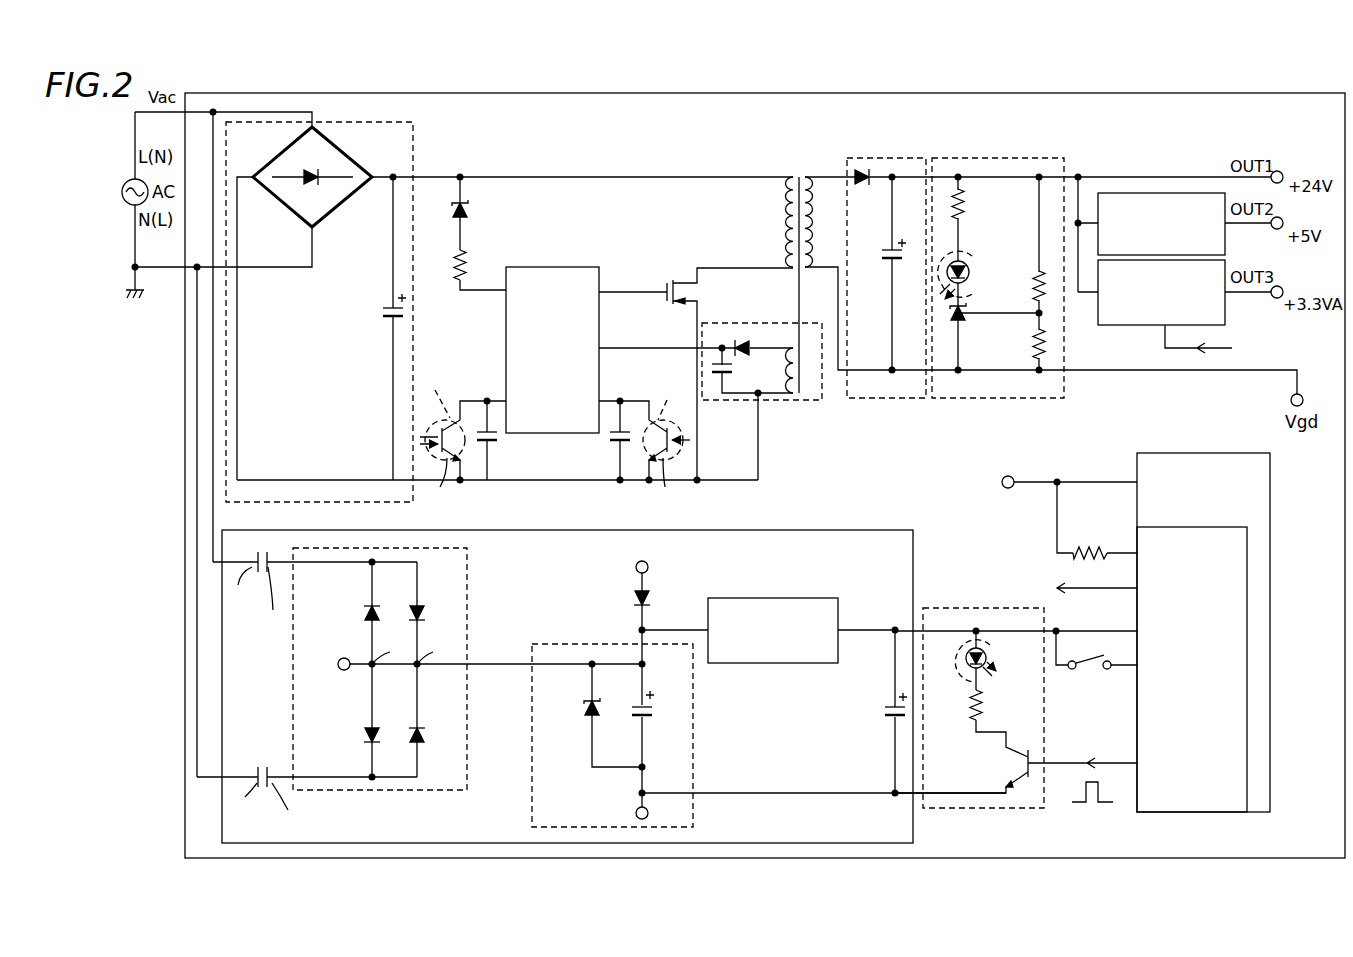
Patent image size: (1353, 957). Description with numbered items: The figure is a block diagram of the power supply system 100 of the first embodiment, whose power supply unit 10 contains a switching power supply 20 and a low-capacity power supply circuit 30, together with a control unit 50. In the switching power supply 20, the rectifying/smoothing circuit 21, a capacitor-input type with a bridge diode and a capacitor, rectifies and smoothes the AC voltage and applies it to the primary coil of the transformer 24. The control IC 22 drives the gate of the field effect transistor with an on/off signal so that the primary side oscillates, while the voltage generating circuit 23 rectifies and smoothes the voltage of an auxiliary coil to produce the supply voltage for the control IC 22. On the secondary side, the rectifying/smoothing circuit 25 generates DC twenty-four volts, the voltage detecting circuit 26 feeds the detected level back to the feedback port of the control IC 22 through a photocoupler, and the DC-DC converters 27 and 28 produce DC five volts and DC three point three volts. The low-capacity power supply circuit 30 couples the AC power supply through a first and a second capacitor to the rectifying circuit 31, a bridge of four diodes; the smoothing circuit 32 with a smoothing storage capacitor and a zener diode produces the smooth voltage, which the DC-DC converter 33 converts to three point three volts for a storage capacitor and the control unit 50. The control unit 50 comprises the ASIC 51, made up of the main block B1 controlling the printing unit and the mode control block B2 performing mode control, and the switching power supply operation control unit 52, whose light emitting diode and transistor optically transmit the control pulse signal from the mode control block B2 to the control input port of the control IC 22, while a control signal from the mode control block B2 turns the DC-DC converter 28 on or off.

The power supply system 100 is at (1142, 93).
The power supply unit 10 is at (524, 319).
The switching power supply 20 is at (722, 160).
The rectifying/smoothing circuit 21 is at (413, 142).
The control IC 22 is at (543, 267).
The voltage generating circuit 23 is at (743, 323).
The transformer 24 is at (798, 172).
The rectifying/smoothing circuit 25 is at (910, 157).
The voltage detecting circuit 26 is at (1005, 157).
The DC-DC converter 27 is at (1140, 193).
The DC-DC converter 28 is at (1113, 325).
The low-capacity power supply circuit 30 is at (840, 530).
The rectifying circuit 31 is at (468, 558).
The smoothing circuit 32 is at (568, 642).
The DC-DC converter 33 is at (793, 598).
The control unit 50 is at (957, 493).
The application specific integrated circuit (ASIC) 51 is at (1228, 605).
The switching power supply operation control unit 52 is at (970, 607).
The main block B1 is at (1245, 472).
The mode control block B2 is at (1235, 607).